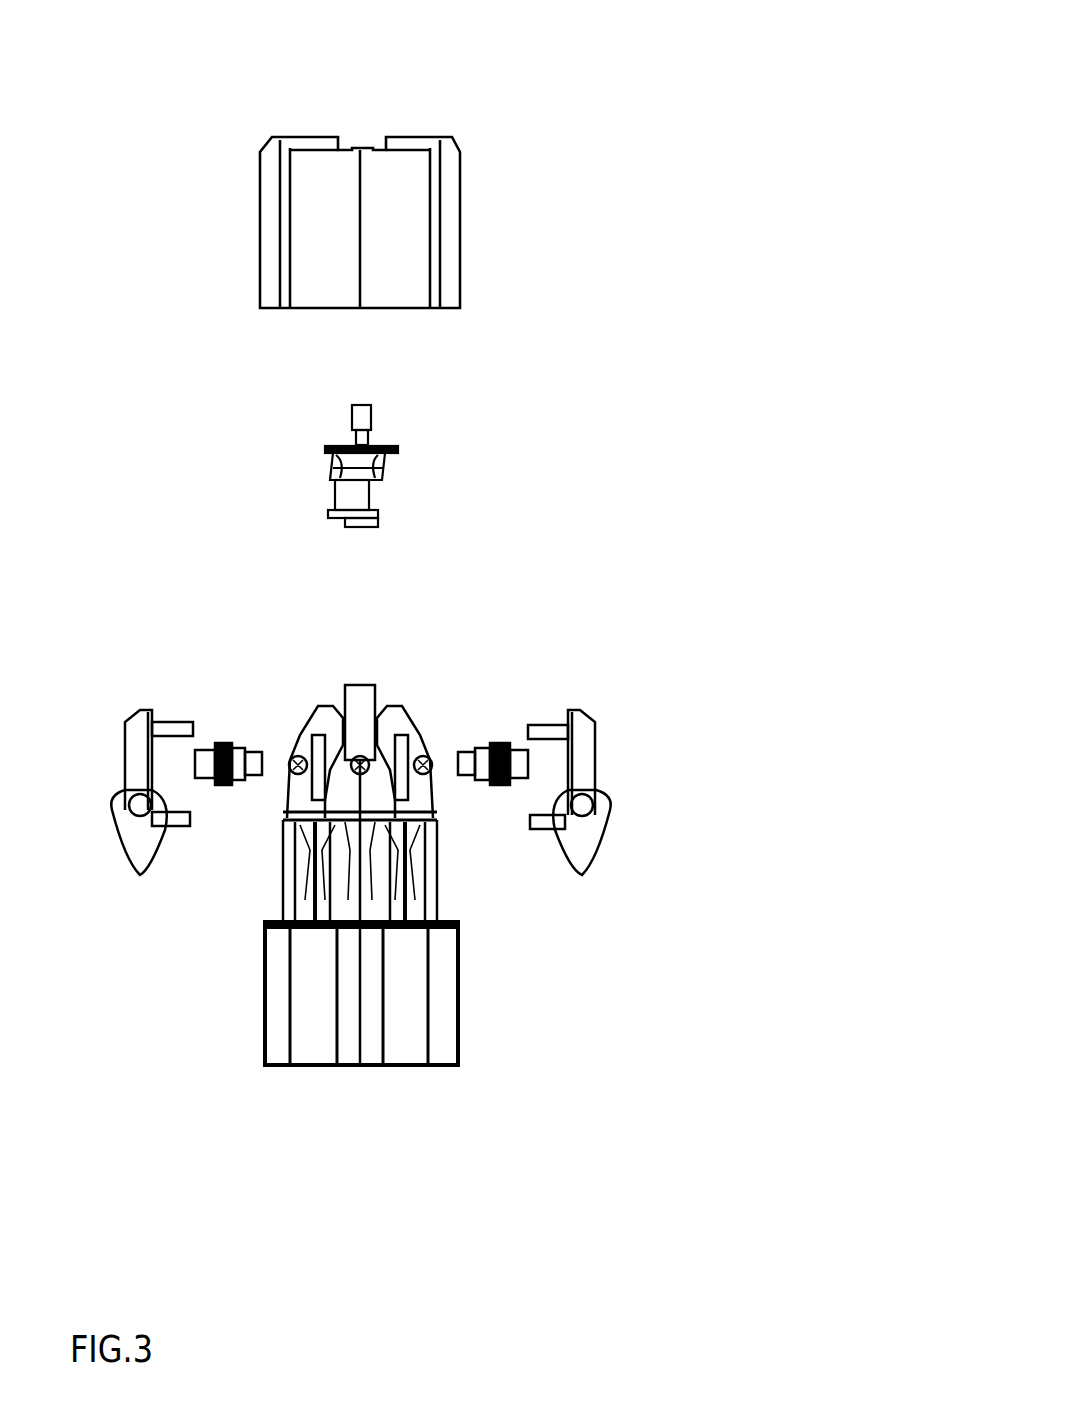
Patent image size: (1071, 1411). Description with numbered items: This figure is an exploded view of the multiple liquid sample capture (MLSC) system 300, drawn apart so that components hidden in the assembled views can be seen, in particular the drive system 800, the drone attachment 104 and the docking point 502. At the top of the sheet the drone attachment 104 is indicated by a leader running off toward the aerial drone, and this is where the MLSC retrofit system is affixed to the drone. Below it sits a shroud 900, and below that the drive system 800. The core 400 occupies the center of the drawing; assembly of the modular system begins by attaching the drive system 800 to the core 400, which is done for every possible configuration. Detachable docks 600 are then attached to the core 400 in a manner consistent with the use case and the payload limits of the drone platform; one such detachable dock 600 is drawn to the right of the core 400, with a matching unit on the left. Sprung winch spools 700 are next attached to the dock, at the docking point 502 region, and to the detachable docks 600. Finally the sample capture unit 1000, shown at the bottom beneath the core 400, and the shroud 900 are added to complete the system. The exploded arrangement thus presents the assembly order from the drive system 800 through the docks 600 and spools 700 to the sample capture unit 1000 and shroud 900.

The multiple liquid sample capture (MLSC) system (exploded) 300 is at (930, 1297).
The drone attachment 104 is at (348, 0).
The shroud 900 is at (460, 224).
The drive system 800 is at (395, 475).
The core 400 is at (345, 685).
The sprung winch spool (SWS) 700 is at (225, 740).
The detachable dock 600 is at (598, 758).
The docking point 502 is at (435, 848).
The sample capture unit (SCU) 1000 is at (265, 1000).